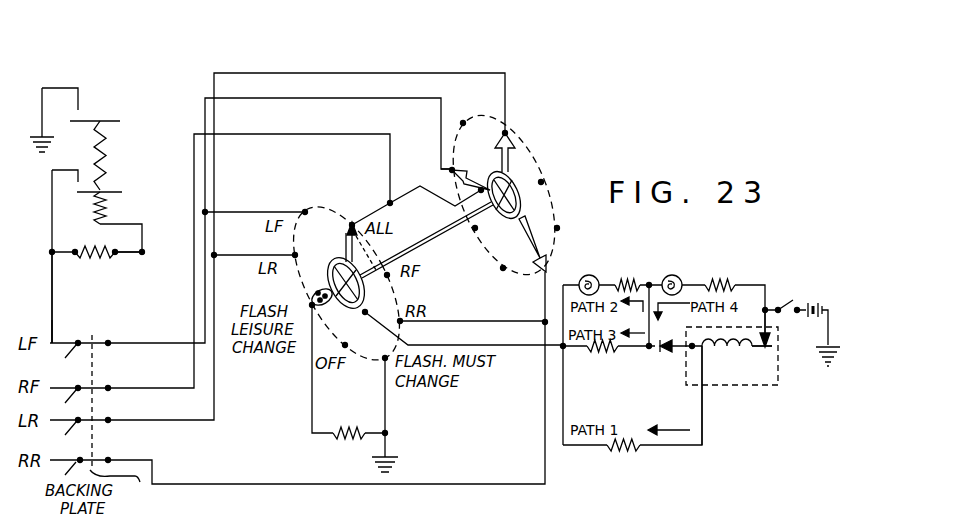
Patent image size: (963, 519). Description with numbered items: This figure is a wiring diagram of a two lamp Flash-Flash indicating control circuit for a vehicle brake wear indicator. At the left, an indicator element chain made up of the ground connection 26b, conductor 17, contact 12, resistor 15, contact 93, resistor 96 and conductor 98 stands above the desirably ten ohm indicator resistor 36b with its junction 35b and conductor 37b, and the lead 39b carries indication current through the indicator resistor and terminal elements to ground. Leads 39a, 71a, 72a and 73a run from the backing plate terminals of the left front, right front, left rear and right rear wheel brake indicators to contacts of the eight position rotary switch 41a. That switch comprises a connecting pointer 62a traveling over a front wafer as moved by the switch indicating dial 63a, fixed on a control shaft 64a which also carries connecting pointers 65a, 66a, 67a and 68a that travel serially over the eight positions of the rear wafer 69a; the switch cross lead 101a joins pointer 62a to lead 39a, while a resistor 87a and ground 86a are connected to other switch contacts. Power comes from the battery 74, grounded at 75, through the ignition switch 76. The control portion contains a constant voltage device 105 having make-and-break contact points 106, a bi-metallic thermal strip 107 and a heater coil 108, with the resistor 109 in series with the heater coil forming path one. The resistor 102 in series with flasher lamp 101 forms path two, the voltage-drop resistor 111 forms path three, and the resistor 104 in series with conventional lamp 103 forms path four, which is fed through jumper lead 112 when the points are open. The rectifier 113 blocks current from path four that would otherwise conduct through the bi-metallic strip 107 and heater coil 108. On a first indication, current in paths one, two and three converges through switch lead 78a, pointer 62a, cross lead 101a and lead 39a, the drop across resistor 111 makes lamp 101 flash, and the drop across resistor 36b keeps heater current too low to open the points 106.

The ground connection 26b is at (42, 104).
The conductor 17 is at (78, 107).
The contact 12 is at (116, 120).
The resistor 15 is at (108, 160).
The contact 93 is at (117, 190).
The resistor 96 is at (112, 205).
The conductor 98 is at (52, 224).
The indicator resistor 36b is at (74, 256).
The junction 35b is at (143, 256).
The conductor 37b is at (60, 258).
The lead 39b is at (52, 322).
The lead 39a is at (170, 342).
The lead 71a is at (178, 388).
The lead 72a is at (178, 420).
The lead 73a is at (130, 447).
The switch cross lead 101a is at (376, 215).
The connecting pointer 62a is at (345, 262).
The switch indicating dial 63a is at (310, 293).
The control shaft 64a is at (428, 244).
The connecting pointer 65a is at (502, 228).
The connecting pointer 66a is at (465, 172).
The connecting pointer 67a is at (503, 133).
The connecting pointer 68a is at (548, 247).
The rear wafer 69a is at (543, 180).
The rotary switch 41a is at (527, 142).
The switch lead 78a is at (552, 345).
The resistor 87a is at (370, 412).
The ground 86a is at (397, 462).
The flasher lamp 101 is at (578, 275).
The resistor 102 is at (620, 279).
The conventional lamp 103 is at (712, 251).
The resistor 104 is at (720, 279).
The ignition switch 76 is at (781, 303).
The battery 74 is at (816, 293).
The ground 75 is at (838, 368).
The jumper lead 112 is at (650, 325).
The resistor 111 is at (612, 354).
The rectifier 113 is at (662, 356).
The heater coil 108 is at (737, 352).
The bi-metallic thermal strip 107 is at (765, 350).
The contact points 106 is at (777, 338).
The constant voltage device 105 is at (726, 390).
The resistor 109 is at (612, 447).